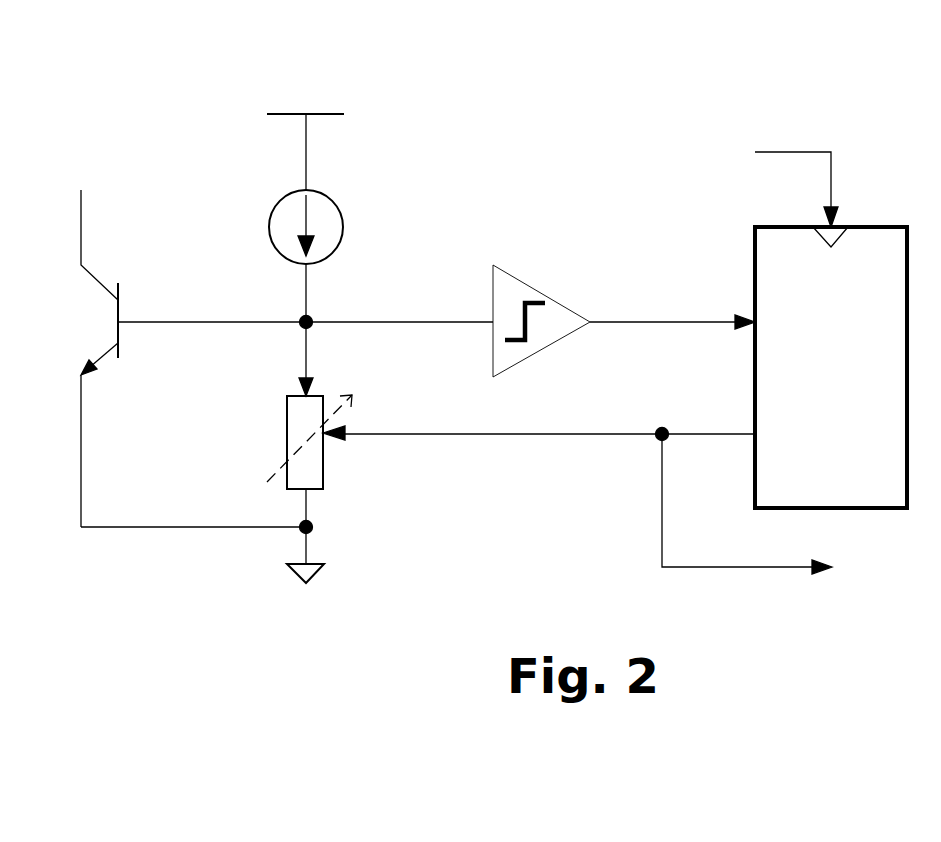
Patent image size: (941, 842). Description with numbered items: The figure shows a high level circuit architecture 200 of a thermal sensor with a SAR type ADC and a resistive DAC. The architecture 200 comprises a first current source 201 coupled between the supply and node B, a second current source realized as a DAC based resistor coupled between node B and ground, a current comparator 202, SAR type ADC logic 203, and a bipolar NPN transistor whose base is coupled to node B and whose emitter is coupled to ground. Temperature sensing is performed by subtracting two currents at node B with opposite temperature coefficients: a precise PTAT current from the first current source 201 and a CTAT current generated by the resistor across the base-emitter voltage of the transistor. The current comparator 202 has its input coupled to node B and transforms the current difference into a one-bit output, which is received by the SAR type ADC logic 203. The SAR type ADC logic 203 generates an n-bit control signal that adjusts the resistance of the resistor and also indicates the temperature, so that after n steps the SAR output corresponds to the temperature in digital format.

The circuit architecture 200 is at (545, 39).
The first current source 201 is at (317, 189).
The current comparator 202 is at (522, 280).
The SAR type ADC logic 203 is at (831, 367).